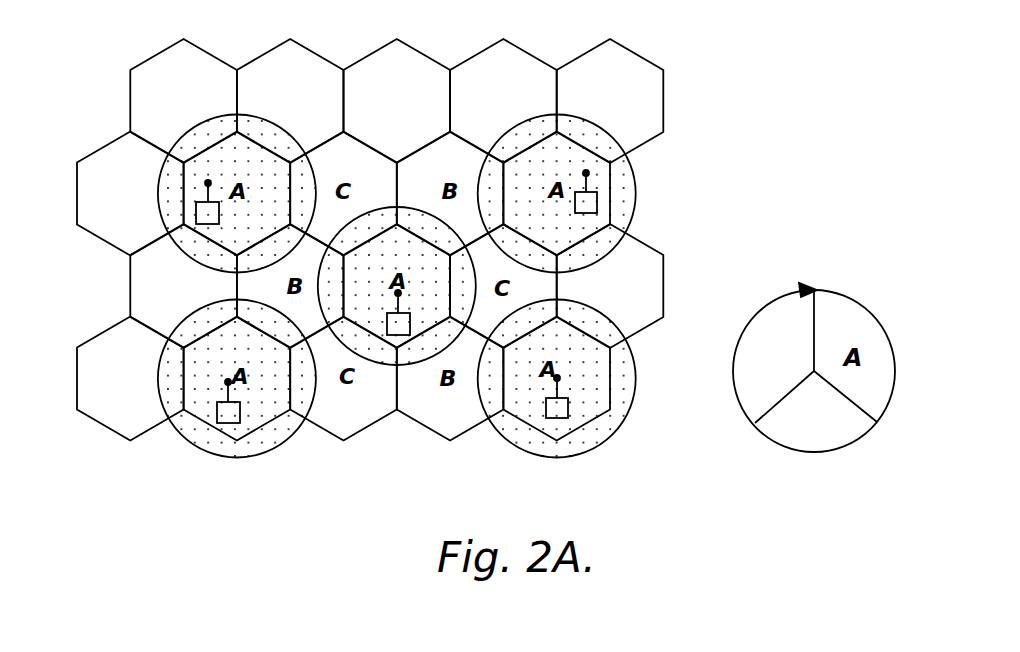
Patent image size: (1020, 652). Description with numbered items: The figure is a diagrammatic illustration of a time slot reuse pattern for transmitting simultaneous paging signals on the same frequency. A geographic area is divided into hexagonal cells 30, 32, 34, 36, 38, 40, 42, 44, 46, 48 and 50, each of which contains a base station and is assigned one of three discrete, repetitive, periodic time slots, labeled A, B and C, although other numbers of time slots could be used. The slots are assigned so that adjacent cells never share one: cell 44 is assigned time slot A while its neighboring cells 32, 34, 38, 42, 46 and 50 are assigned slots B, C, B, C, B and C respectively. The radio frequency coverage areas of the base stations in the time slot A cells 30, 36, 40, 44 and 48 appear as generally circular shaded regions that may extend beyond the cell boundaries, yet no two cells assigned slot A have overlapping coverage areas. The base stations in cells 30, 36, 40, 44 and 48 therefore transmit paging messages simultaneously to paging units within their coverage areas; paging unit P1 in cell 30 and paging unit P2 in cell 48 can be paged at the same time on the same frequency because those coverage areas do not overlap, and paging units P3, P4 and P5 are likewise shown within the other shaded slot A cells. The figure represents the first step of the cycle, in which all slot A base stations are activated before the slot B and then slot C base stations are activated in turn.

The cell 30 is at (556, 194).
The cell 32 is at (450, 194).
The cell 34 is at (343, 194).
The cell 36 is at (237, 194).
The cell 38 is at (290, 286).
The cell 40 is at (237, 379).
The cell 42 is at (343, 379).
The cell 44 is at (397, 286).
The cell 46 is at (450, 379).
The cell 48 is at (556, 379).
The cell 50 is at (503, 286).
The paging unit P1 is at (597, 203).
The paging unit P2 is at (568, 413).
The paging unit P3 is at (392, 335).
The paging unit P4 is at (217, 413).
The paging unit P5 is at (196, 212).